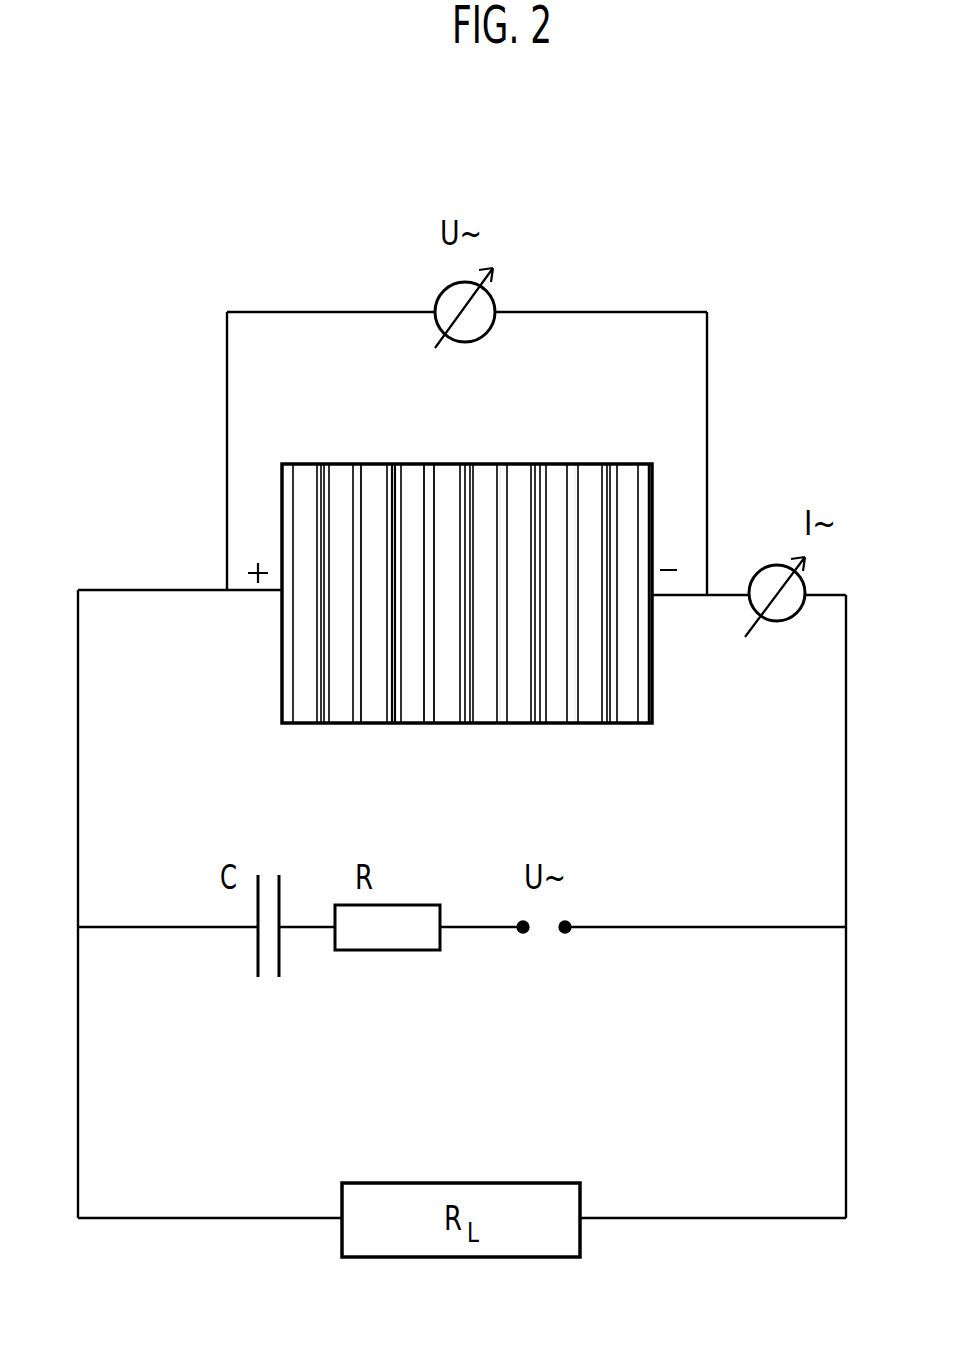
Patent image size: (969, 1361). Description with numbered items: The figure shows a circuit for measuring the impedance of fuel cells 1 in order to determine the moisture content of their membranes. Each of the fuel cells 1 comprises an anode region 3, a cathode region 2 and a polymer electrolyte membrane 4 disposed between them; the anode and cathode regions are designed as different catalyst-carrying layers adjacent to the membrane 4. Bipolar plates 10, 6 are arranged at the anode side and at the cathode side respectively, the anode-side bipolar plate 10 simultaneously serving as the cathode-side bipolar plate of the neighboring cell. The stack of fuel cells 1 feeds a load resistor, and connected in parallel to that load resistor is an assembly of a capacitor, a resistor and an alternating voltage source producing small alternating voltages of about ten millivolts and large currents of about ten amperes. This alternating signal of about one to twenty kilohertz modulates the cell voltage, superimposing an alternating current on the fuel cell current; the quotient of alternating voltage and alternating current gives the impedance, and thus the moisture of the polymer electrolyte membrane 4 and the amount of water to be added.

The fuel cells 1 is at (575, 446).
The cathode region 2 is at (413, 703).
The anode region 3 is at (365, 702).
The polymer electrolyte membrane 4 is at (390, 707).
The cathode-side bipolar plate 6 is at (423, 488).
The anode-side bipolar plate 10 is at (367, 487).